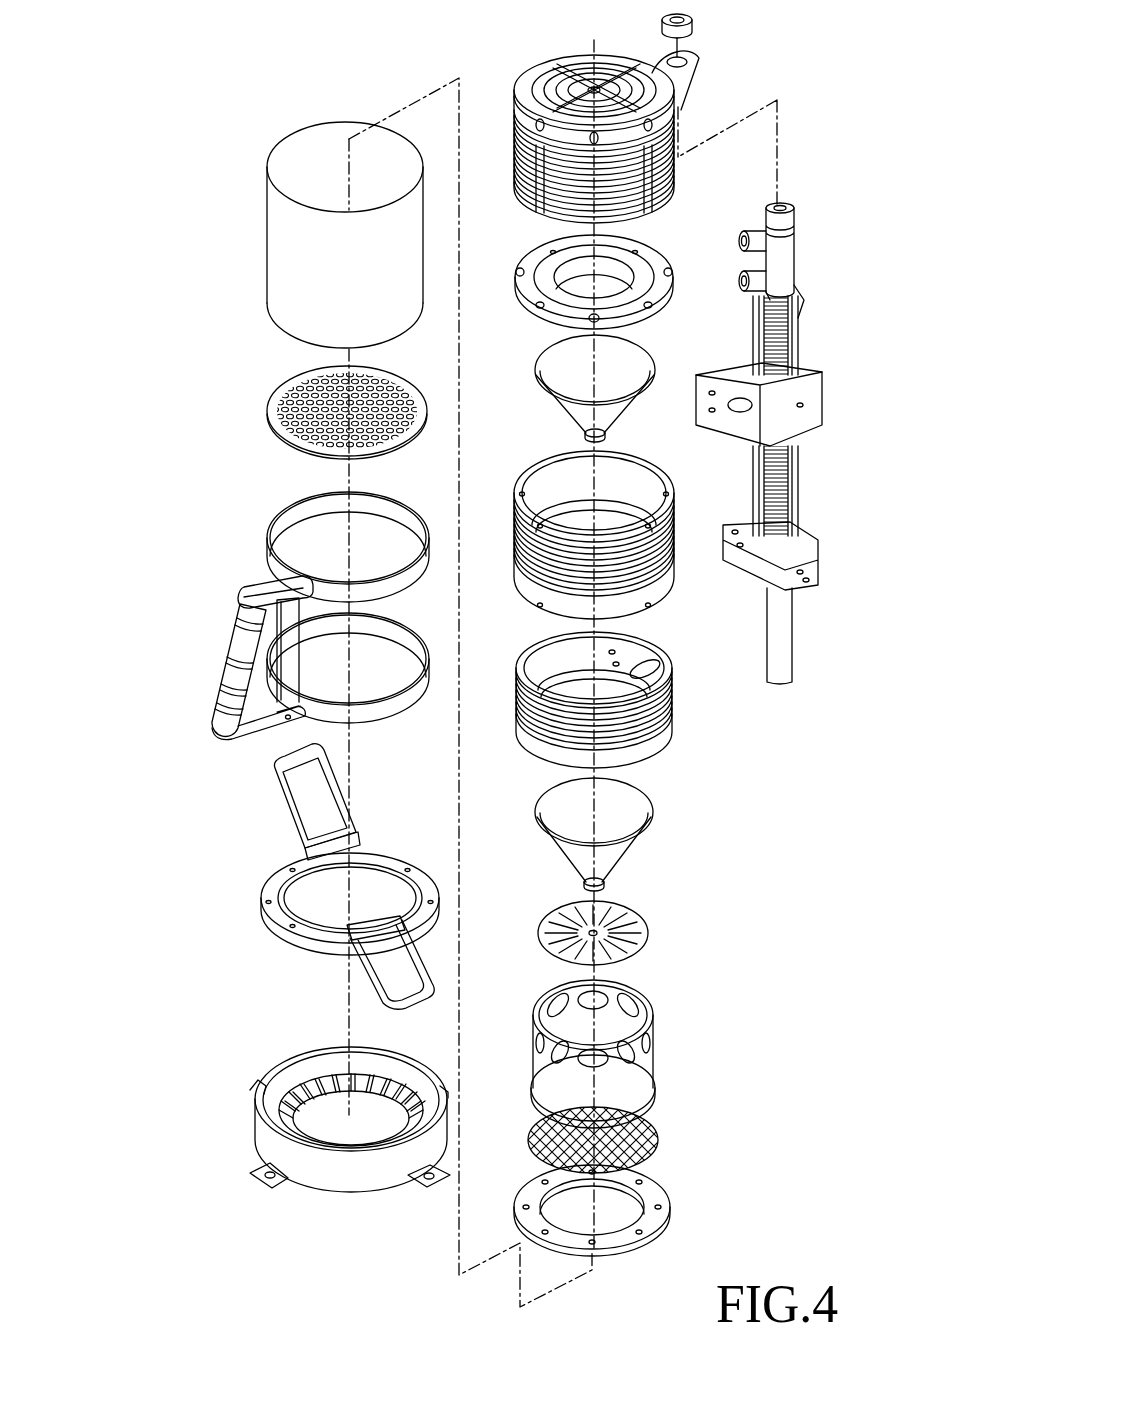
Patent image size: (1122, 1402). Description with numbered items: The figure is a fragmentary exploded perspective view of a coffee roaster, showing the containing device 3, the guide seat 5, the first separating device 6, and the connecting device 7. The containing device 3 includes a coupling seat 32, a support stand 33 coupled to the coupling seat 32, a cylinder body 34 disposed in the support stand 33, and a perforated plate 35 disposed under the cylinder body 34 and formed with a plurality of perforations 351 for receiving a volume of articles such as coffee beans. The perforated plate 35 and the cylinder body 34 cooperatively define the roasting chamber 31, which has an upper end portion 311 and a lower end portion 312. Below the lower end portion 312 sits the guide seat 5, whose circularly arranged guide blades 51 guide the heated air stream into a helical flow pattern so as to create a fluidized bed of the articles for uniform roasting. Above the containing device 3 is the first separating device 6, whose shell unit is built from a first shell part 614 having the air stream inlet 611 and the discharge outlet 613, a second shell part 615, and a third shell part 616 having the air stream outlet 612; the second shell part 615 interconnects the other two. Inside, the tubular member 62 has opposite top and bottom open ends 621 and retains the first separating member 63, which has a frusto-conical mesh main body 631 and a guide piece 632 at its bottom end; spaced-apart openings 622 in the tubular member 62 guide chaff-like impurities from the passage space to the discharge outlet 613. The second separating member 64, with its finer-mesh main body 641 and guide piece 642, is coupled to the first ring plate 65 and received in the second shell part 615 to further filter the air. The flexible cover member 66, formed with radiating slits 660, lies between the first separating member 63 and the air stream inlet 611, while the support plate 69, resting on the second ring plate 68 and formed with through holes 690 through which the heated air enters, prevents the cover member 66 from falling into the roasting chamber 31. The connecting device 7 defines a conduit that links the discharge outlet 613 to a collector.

The containing device 3 is at (216, 668).
The roasting chamber 31 is at (303, 196).
The upper end portion 311 is at (350, 123).
The lower end portion 312 is at (283, 338).
The coupling seat 32 is at (272, 900).
The support stand 33 is at (282, 572).
The cylinder body 34 is at (266, 222).
The perforated plate 35 is at (333, 393).
The perforations 351 is at (385, 372).
The guide seat 5 is at (319, 1099).
The guide blades 51 is at (317, 1097).
The first separating device 6 is at (618, 117).
The air stream inlet 611 is at (641, 711).
The air stream outlet 612 is at (586, 70).
The discharge outlet 613 is at (637, 673).
The first shell part 614 is at (672, 732).
The second shell part 615 is at (668, 575).
The third shell part 616 is at (575, 117).
The tubular member 62 is at (614, 1031).
The top and bottom open ends 621 is at (640, 993).
The openings 622 is at (557, 1003).
The first separating member 63 is at (626, 834).
The main body 631 is at (622, 853).
The guide piece 632 is at (583, 887).
The second separating member 64 is at (595, 374).
The main body 641 is at (560, 408).
The guide piece 642 is at (585, 436).
The first ring plate 65 is at (535, 252).
The flexible cover member 66 is at (596, 919).
The slits 660 is at (555, 908).
The second ring plate 68 is at (668, 1212).
The support plate 69 is at (645, 1150).
The through holes 690 is at (652, 1160).
The connecting device 7 is at (798, 505).